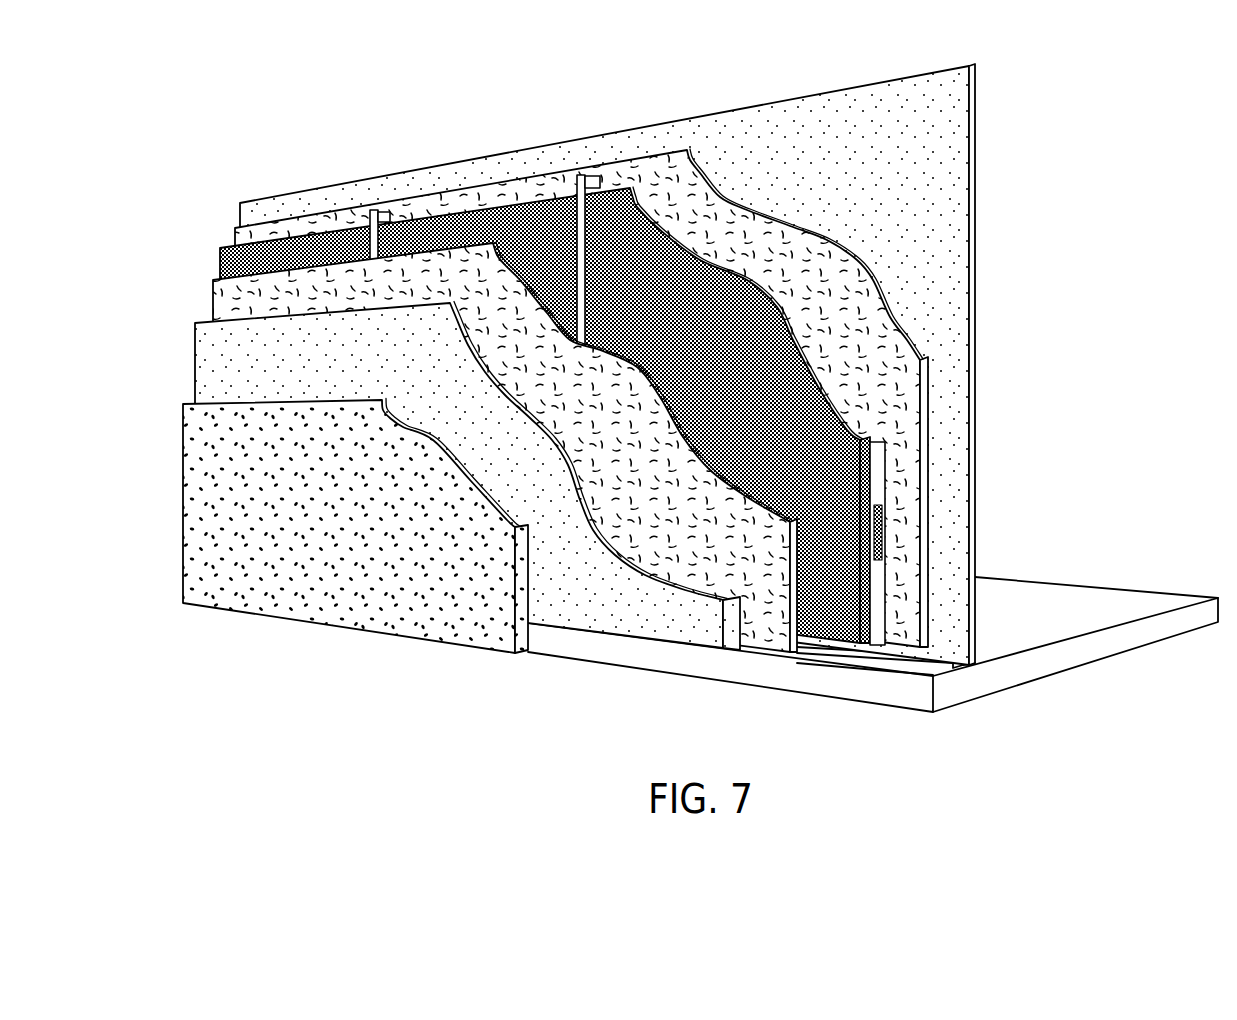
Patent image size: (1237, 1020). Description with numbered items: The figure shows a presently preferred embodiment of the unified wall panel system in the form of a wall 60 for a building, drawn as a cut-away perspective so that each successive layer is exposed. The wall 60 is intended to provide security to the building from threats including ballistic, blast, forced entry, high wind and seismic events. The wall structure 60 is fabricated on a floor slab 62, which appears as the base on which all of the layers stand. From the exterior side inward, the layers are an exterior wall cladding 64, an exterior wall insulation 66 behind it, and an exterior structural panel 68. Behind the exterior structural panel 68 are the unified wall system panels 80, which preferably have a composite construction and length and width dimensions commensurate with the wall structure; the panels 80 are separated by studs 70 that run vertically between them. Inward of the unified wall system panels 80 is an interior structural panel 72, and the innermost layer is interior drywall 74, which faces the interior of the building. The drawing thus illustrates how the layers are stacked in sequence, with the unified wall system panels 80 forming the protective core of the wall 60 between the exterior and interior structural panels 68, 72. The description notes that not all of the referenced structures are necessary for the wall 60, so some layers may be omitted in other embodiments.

The wall 60 is at (254, 124).
The floor slab 62 is at (873, 685).
The exterior wall cladding 64 is at (321, 536).
The exterior wall insulation 66 is at (343, 379).
The exterior structural panel 68 is at (579, 398).
The studs 70 is at (387, 217).
The interior structural panel 72 is at (811, 282).
The interior drywall 74 is at (885, 177).
The unified wall system panels 80 is at (691, 334).